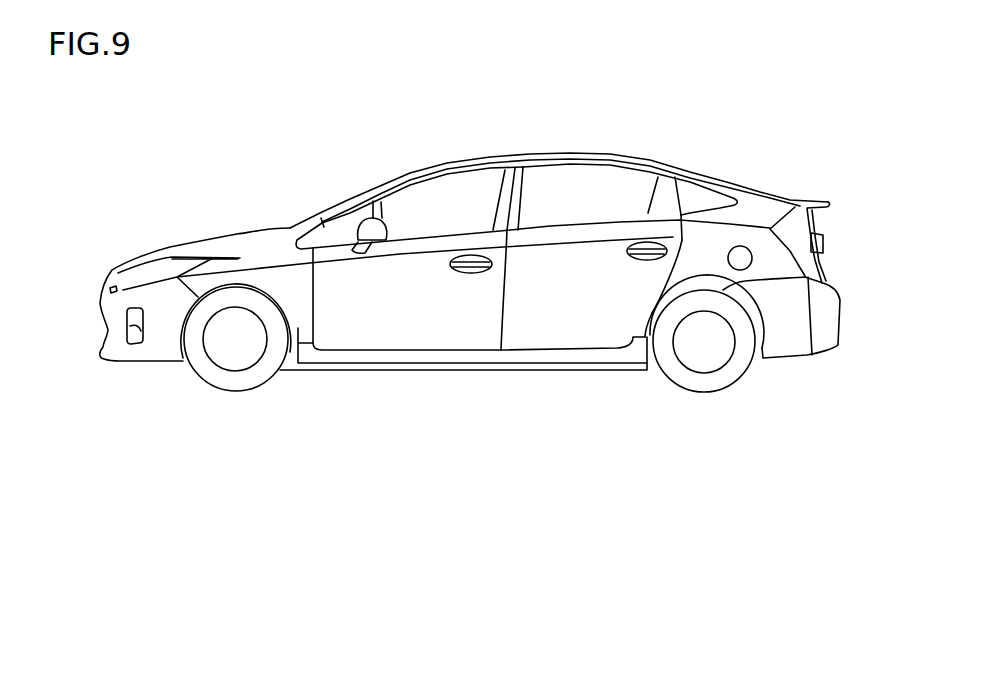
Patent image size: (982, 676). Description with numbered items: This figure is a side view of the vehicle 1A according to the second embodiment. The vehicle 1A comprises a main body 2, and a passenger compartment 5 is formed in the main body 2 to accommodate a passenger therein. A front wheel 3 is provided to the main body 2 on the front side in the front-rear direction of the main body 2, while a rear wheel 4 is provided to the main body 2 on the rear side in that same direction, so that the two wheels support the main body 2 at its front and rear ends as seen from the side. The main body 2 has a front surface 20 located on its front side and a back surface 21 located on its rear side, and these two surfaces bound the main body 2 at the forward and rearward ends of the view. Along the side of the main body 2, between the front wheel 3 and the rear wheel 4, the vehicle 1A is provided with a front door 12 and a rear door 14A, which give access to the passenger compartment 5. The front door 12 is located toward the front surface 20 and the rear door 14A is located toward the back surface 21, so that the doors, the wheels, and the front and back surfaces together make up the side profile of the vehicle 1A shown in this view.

The vehicle 1A is at (690, 132).
The main body 2 is at (570, 150).
The front wheel 3 is at (240, 388).
The rear wheel 4 is at (705, 388).
The passenger compartment 5 is at (443, 200).
The front door 12 is at (425, 335).
The rear door 14A is at (551, 325).
The front surface 20 is at (108, 282).
The back surface 21 is at (825, 243).